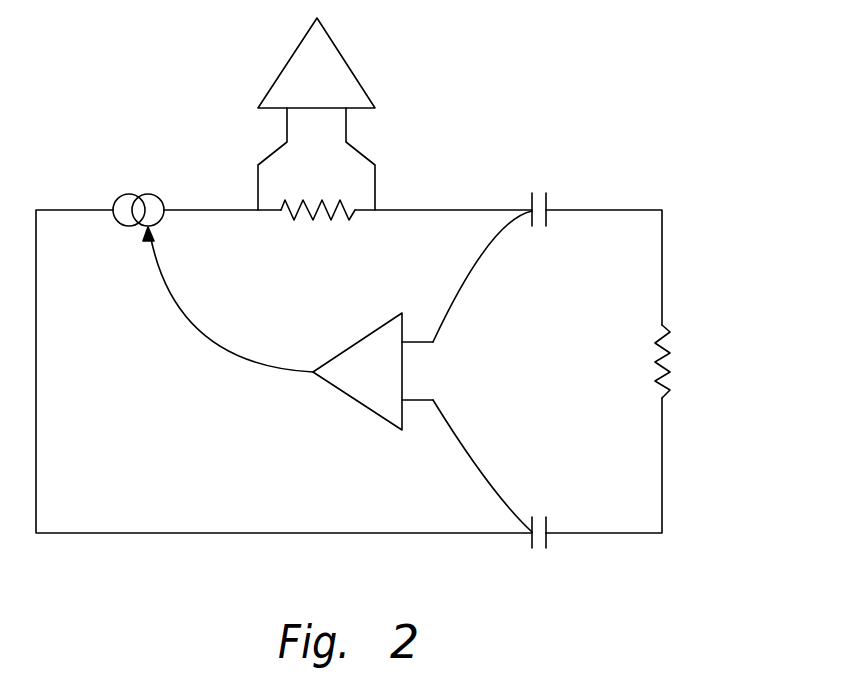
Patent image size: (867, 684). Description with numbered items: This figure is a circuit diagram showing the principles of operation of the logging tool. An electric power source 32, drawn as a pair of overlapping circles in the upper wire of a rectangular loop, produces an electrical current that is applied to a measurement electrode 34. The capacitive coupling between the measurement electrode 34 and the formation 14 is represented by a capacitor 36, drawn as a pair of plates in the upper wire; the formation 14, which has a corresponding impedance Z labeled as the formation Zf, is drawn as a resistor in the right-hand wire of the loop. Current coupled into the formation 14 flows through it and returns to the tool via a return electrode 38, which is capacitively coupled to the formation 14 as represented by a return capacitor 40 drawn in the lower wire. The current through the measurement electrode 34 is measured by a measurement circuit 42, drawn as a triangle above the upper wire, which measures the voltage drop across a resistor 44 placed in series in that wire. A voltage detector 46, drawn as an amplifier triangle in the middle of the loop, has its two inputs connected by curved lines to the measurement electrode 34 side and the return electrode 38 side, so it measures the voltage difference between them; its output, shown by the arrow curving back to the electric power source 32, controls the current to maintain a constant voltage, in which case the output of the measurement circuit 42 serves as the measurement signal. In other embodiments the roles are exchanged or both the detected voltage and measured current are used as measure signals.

The formation 14 is at (657, 375).
The electric power source 32 is at (153, 193).
The measurement electrode 34 is at (530, 207).
The capacitor 36 is at (546, 221).
The return electrode 38 is at (531, 538).
The return capacitor 40 is at (547, 522).
The measurement circuit 42 is at (342, 53).
The resistor 44 is at (307, 218).
The voltage detector 46 is at (358, 403).